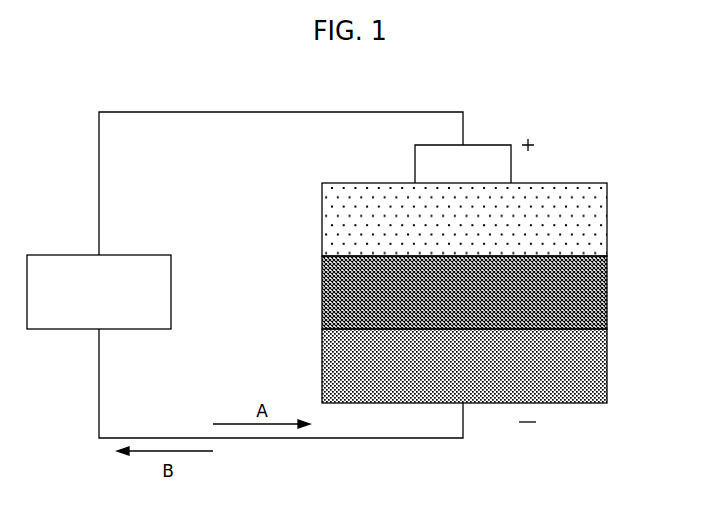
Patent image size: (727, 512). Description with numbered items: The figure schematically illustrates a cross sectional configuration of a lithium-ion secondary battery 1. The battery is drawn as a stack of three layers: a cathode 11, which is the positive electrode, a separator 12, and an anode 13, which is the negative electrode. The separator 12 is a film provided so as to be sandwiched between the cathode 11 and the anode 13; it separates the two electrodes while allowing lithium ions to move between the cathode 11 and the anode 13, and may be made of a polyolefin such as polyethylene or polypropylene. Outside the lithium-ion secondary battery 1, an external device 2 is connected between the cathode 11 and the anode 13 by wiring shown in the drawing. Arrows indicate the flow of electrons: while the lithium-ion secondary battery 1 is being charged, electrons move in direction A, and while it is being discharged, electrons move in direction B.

The lithium-ion secondary battery 1 is at (505, 294).
The external device 2 is at (171, 292).
The cathode 11 is at (596, 219).
The separator 12 is at (600, 296).
The anode 13 is at (485, 366).